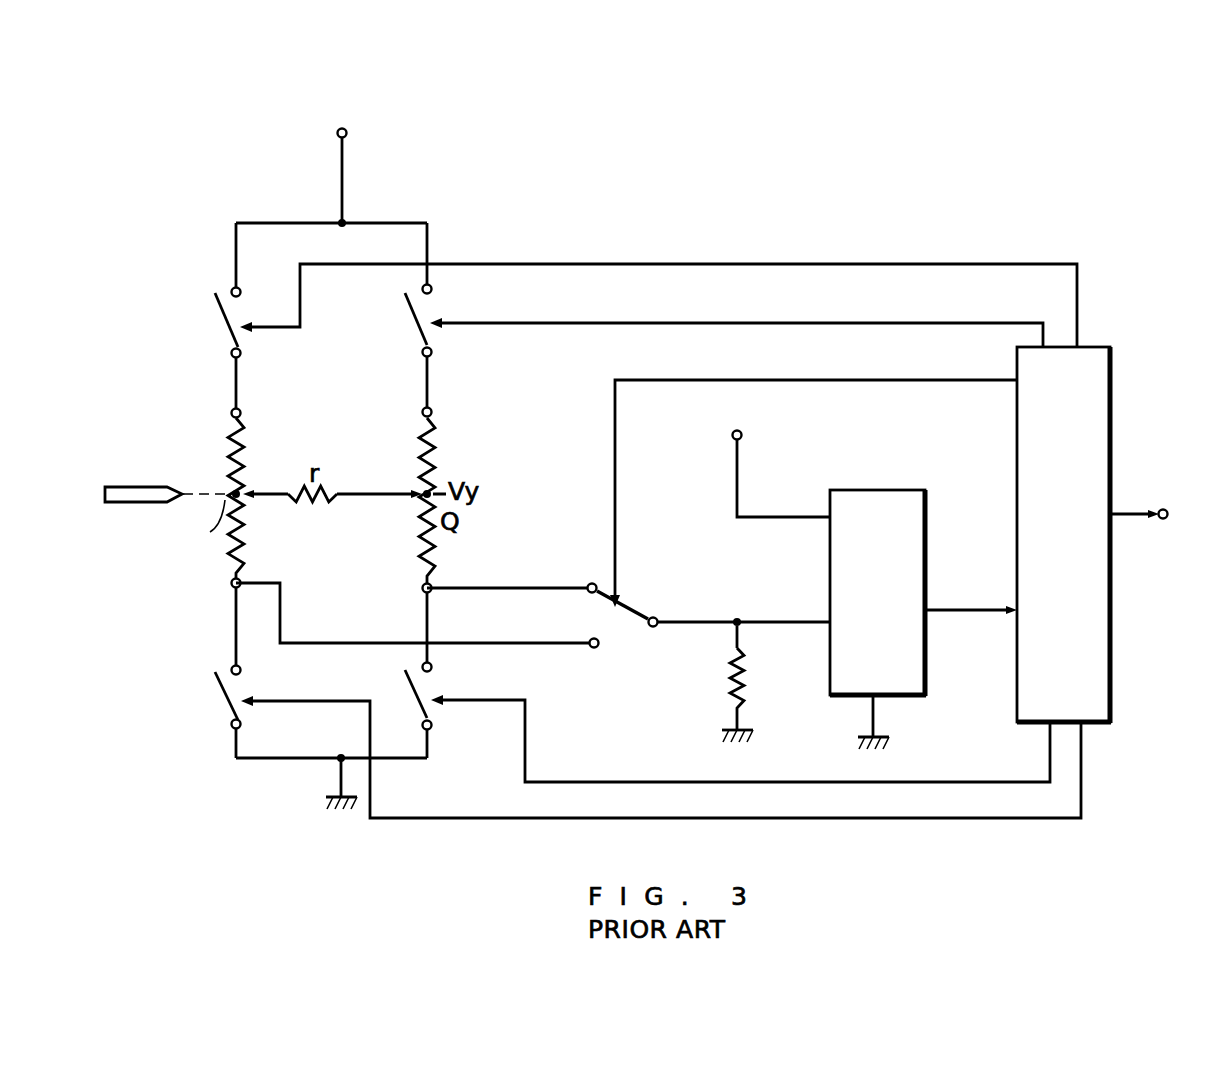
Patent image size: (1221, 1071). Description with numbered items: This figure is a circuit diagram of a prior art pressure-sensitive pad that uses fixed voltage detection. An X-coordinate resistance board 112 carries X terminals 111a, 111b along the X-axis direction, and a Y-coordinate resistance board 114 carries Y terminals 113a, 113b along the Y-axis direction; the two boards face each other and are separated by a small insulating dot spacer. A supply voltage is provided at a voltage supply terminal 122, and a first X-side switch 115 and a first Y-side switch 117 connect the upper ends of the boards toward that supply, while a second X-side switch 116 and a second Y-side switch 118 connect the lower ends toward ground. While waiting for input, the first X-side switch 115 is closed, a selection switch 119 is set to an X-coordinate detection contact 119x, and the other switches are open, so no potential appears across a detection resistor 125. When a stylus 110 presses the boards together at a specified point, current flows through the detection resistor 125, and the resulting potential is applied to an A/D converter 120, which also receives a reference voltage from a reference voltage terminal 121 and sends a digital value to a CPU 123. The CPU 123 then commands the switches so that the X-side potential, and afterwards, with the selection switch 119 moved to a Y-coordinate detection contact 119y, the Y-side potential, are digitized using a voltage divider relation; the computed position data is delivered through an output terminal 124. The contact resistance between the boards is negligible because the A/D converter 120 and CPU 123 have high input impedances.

The stylus 110 is at (142, 486).
The X terminal 111a is at (230, 414).
The X terminal 111b is at (229, 589).
The X-coordinate resistance board 112 is at (228, 460).
The Y terminal 113a is at (431, 409).
The Y terminal 113b is at (432, 584).
The Y-coordinate resistance board 114 is at (441, 472).
The first X-side switch 115 is at (213, 326).
The second X-side switch 116 is at (214, 712).
The first Y-side switch 117 is at (418, 323).
The second Y-side switch 118 is at (425, 692).
The selection switch 119 is at (630, 610).
The X-coordinate detection contact 119x is at (588, 592).
The Y-coordinate detection contact 119y is at (596, 648).
The A/D converter 120 is at (865, 490).
The reference voltage terminal 121 is at (733, 433).
The voltage supply terminal 122 is at (336, 130).
The CPU 123 is at (1102, 366).
The output terminal 124 is at (1165, 510).
The detection resistor 125 is at (731, 681).